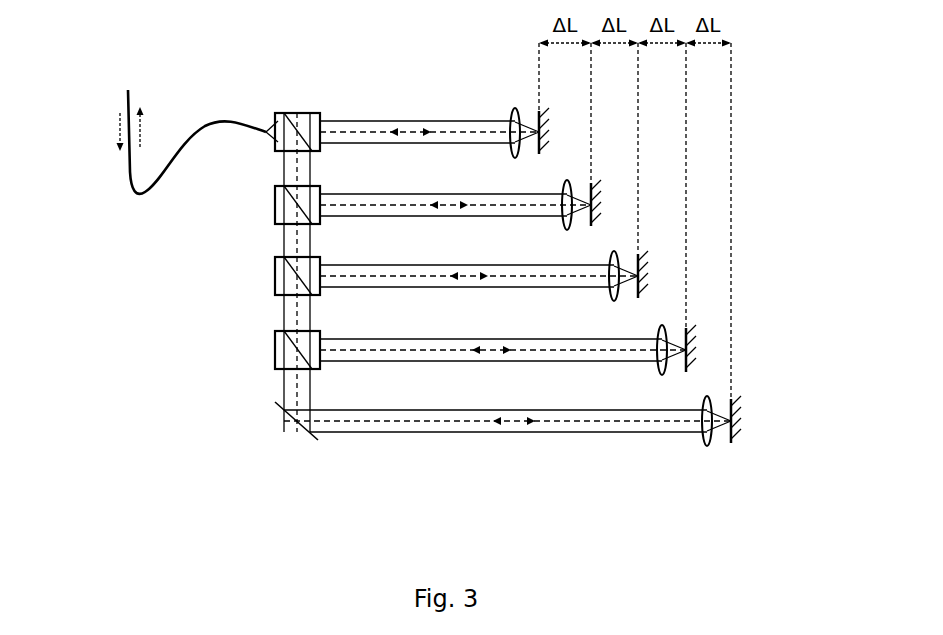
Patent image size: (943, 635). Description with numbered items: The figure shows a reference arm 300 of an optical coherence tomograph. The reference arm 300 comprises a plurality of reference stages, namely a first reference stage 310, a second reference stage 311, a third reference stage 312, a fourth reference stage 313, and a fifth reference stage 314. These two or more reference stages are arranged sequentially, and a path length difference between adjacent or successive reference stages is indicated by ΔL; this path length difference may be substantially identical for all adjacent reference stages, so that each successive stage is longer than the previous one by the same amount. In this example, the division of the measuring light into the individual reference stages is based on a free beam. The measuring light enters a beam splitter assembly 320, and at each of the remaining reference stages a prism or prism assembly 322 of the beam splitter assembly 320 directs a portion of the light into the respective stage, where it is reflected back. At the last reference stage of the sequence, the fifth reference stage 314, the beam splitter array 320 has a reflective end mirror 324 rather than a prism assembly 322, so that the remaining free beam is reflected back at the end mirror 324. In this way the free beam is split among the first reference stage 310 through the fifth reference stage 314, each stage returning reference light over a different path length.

The reference arm 300 is at (110, 60).
The first reference stage 310 is at (746, 135).
The second reference stage 311 is at (748, 212).
The third reference stage 312 is at (748, 282).
The fourth reference stage 313 is at (753, 352).
The fifth reference stage 314 is at (755, 423).
The beam splitter assembly 320 is at (196, 420).
The prism assembly 322 is at (276, 150).
The end mirror 324 is at (295, 423).